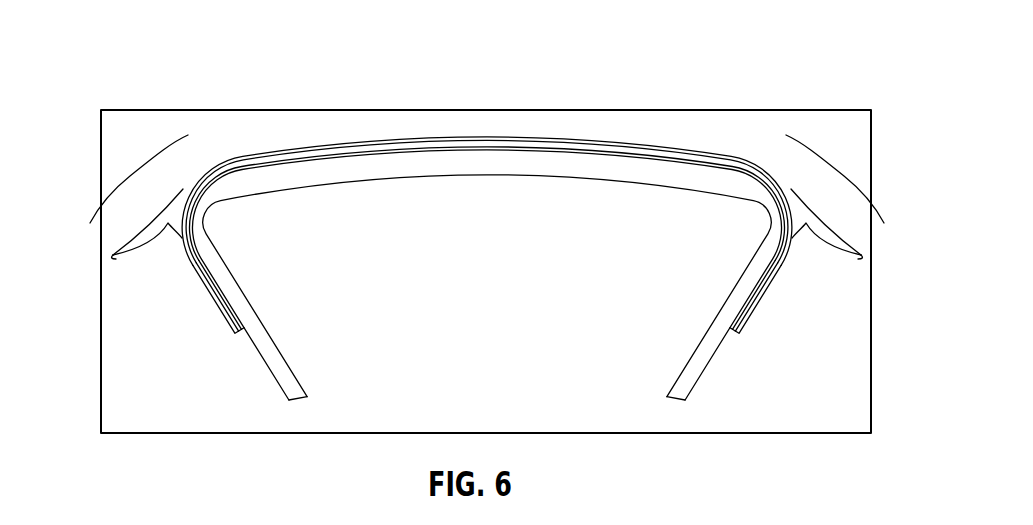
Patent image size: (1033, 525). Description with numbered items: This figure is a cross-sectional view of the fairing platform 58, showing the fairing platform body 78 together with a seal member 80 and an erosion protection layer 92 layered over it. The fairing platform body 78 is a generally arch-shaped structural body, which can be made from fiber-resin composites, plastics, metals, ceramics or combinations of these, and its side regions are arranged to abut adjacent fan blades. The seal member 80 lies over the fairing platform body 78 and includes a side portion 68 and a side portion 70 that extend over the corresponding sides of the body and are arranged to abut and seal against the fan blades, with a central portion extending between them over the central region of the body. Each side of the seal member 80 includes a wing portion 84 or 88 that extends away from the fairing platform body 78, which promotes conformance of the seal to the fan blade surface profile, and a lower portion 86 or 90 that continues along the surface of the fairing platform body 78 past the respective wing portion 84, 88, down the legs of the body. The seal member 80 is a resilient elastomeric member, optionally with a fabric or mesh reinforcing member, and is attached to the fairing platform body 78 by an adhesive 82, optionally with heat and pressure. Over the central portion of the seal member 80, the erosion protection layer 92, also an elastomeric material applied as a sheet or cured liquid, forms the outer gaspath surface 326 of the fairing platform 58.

The fairing platform 58 is at (765, 38).
The side portion 68 is at (130, 175).
The side portion 70 is at (844, 175).
The fairing platform body 78 is at (486, 275).
The seal member 80 is at (190, 125).
The adhesive 82 is at (531, 151).
The wing portion 84 is at (118, 258).
The lower portion 86 is at (856, 258).
The wing portion 88 is at (212, 297).
The lower portion 90 is at (762, 297).
The erosion protection layer 92 is at (364, 141).
The gaspath surface 326 is at (487, 132).